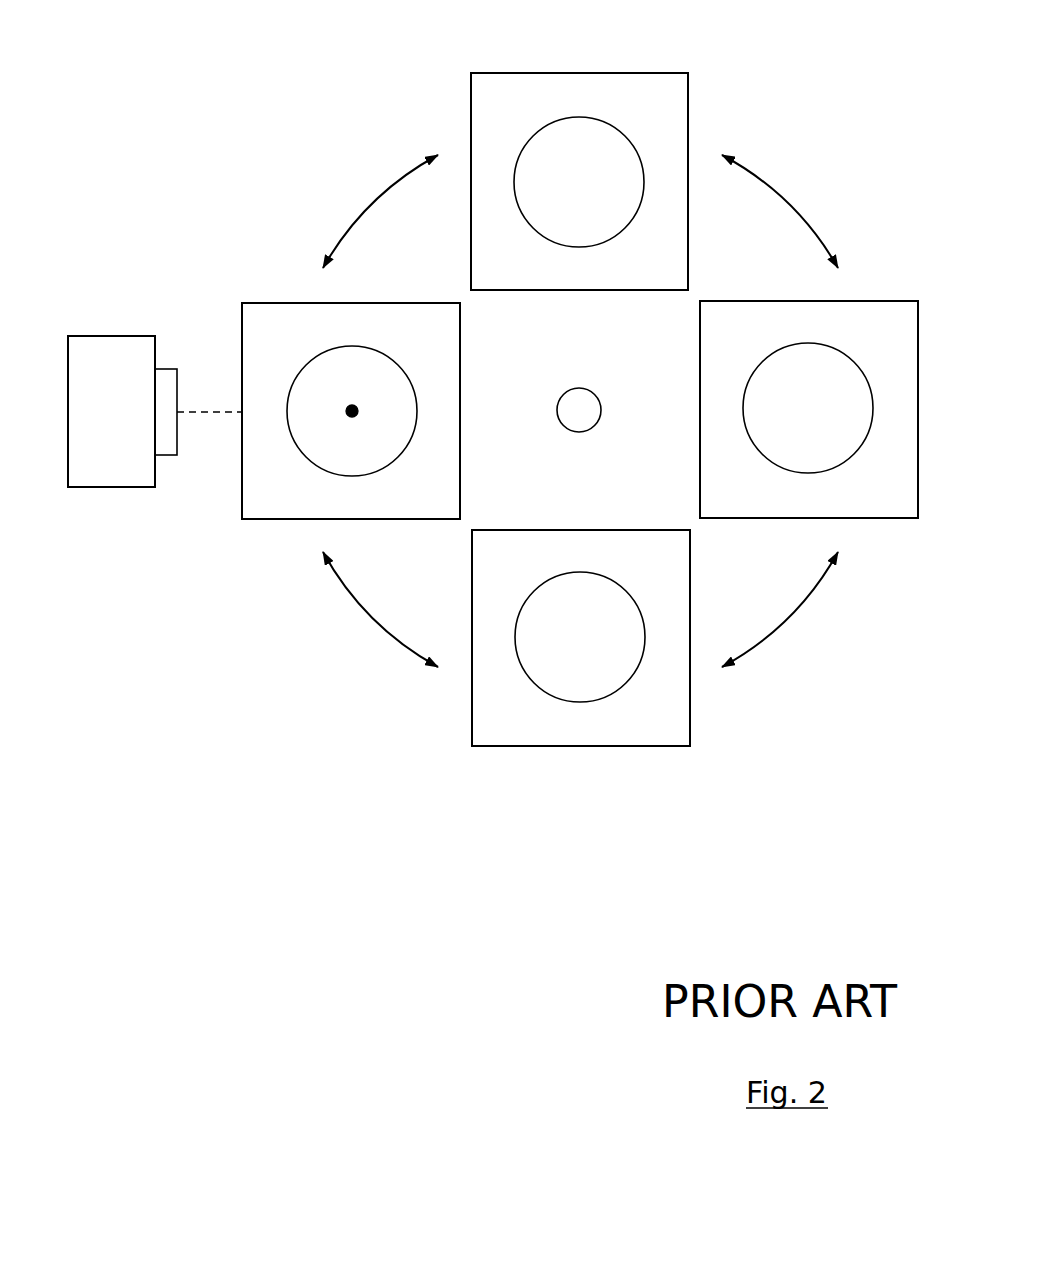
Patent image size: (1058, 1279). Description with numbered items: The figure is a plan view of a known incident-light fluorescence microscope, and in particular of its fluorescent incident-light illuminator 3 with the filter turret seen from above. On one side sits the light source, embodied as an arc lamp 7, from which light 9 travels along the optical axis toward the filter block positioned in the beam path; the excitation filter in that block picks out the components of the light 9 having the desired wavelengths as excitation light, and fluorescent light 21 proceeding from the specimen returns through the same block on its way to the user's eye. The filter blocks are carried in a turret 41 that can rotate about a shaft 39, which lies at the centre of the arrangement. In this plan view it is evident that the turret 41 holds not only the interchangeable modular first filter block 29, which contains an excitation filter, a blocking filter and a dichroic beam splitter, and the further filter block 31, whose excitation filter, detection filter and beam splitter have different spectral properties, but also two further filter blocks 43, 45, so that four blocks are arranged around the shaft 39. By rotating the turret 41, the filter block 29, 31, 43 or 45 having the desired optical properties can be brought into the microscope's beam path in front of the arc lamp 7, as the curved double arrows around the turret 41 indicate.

The fluorescent incident-light illuminator 3 is at (296, 772).
The arc lamp 7 is at (133, 368).
The light 9 is at (222, 410).
The fluorescent light 21 is at (352, 411).
The first filter block 29 is at (264, 325).
The further filter block 31 is at (885, 322).
The shaft 39 is at (579, 408).
The turret 41 is at (790, 135).
The further filter block 43 is at (667, 723).
The further filter block 45 is at (633, 95).